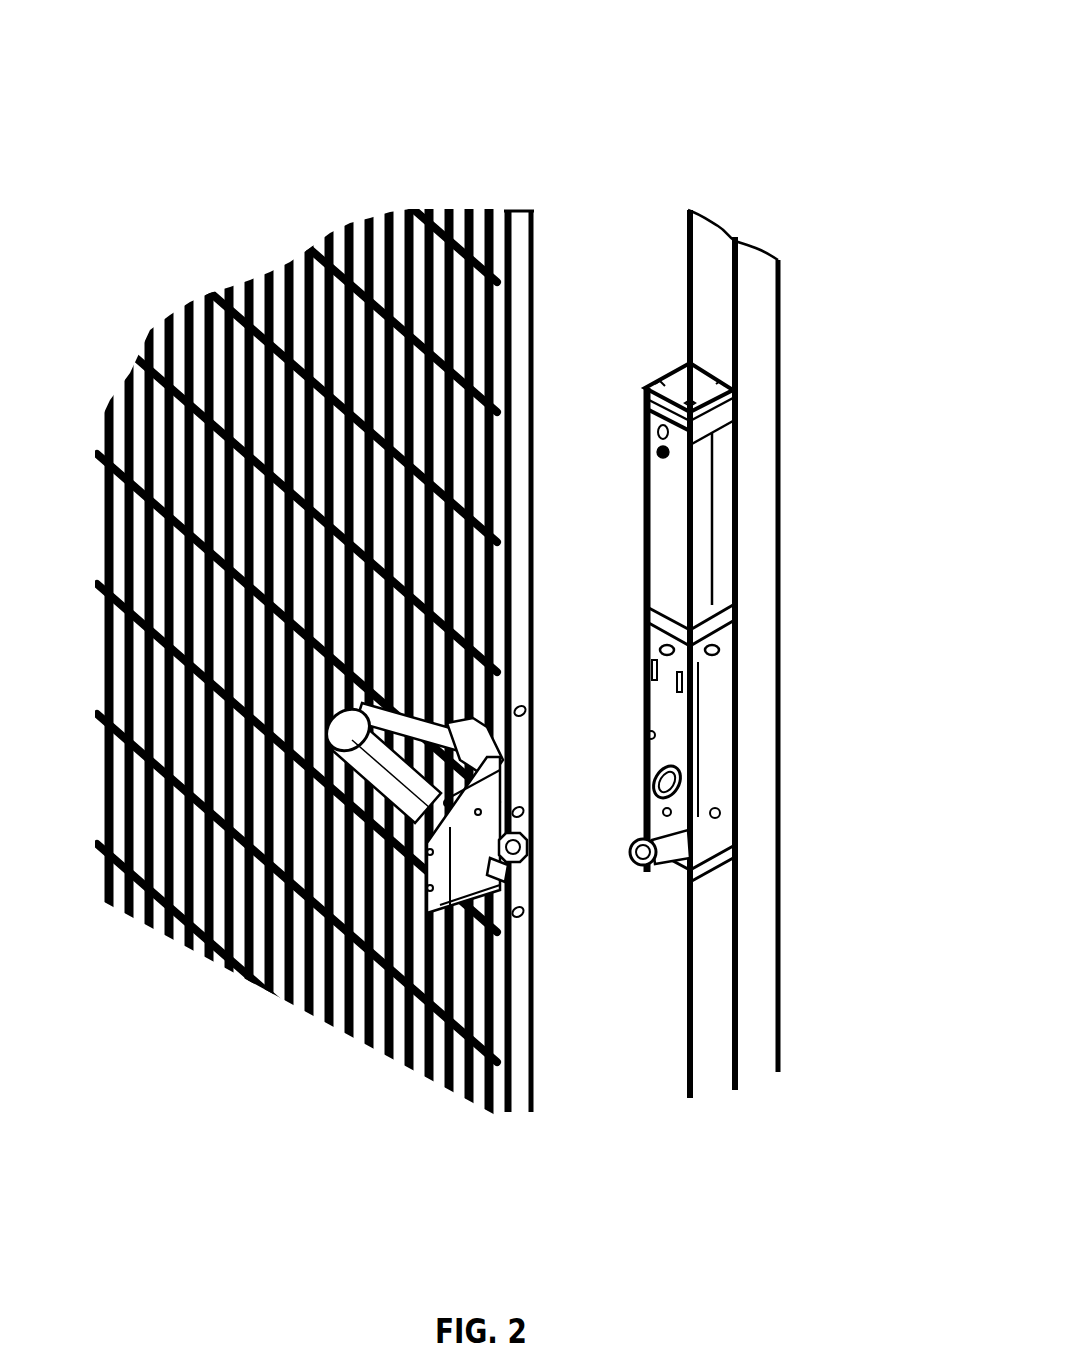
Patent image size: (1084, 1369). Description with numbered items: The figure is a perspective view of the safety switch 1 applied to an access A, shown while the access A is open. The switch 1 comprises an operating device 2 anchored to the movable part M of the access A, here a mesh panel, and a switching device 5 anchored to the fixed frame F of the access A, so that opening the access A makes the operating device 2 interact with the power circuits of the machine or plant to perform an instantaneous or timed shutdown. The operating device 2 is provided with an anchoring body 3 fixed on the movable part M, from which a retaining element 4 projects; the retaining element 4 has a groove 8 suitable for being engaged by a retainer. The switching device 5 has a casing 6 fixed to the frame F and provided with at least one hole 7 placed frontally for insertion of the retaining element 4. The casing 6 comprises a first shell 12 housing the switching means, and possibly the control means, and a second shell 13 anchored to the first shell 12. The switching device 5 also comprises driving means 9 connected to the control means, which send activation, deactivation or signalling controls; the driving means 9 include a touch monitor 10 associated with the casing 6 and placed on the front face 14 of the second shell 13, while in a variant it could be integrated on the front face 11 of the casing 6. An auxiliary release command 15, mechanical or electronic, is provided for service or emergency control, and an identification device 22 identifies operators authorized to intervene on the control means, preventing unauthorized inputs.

The access A is at (257, 97).
The movable part M is at (523, 210).
The fixed frame F is at (705, 225).
The safety switch 1 is at (737, 621).
The operating device 2 is at (513, 923).
The anchoring body 3 is at (503, 747).
The retaining element 4 is at (530, 842).
The switching device 5 is at (740, 400).
The casing 6 is at (739, 651).
The hole 7 is at (645, 777).
The groove 8 is at (510, 860).
The driving means 9 is at (645, 390).
The touch monitor 10 is at (655, 507).
The front face of the casing 11 is at (736, 705).
The first shell 12 is at (736, 771).
The second shell 13 is at (736, 534).
The front face of the second shell 14 is at (643, 563).
The auxiliary release command 15 is at (647, 870).
The identification device 22 is at (677, 464).